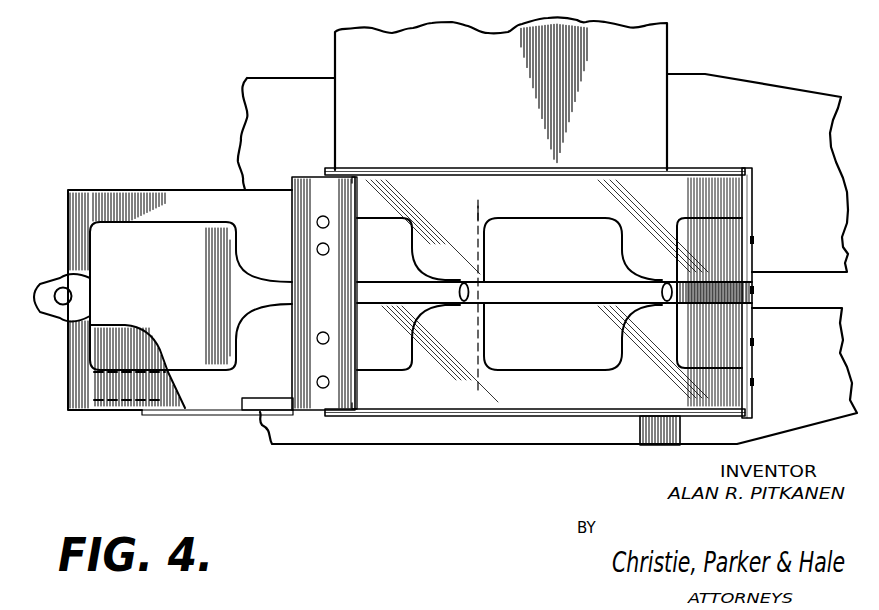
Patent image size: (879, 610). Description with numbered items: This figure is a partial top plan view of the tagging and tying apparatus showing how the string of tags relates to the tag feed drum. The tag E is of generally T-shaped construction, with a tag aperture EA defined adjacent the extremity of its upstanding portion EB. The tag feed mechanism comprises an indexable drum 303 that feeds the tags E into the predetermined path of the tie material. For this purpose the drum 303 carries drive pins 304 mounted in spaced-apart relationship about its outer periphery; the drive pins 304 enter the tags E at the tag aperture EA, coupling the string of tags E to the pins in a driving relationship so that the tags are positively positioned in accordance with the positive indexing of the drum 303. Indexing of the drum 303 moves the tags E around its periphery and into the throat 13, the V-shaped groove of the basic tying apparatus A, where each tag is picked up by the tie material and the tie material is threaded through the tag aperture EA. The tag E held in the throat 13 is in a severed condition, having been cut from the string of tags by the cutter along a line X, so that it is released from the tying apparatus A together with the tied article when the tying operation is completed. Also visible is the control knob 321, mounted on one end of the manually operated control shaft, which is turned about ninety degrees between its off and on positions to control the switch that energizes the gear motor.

The indexable drum 303 is at (436, 394).
The drive pins 304 is at (463, 283).
The control knob 321 is at (640, 450).
The throat 13 is at (780, 291).
The tag E is at (388, 275).
The tag aperture EA is at (60, 283).
The upstanding portion EB is at (151, 222).
The tying apparatus A is at (807, 380).
The line X is at (478, 213).